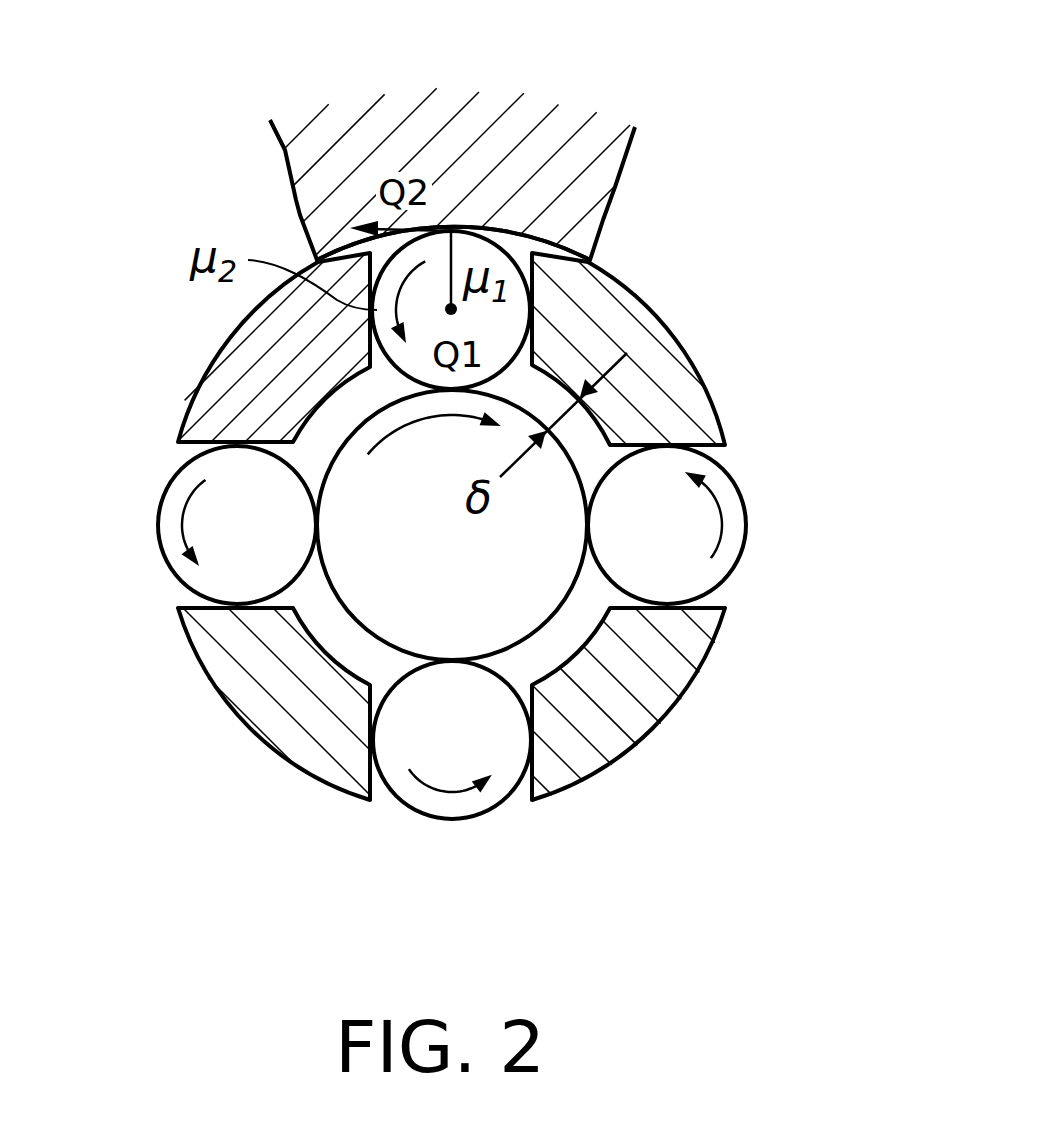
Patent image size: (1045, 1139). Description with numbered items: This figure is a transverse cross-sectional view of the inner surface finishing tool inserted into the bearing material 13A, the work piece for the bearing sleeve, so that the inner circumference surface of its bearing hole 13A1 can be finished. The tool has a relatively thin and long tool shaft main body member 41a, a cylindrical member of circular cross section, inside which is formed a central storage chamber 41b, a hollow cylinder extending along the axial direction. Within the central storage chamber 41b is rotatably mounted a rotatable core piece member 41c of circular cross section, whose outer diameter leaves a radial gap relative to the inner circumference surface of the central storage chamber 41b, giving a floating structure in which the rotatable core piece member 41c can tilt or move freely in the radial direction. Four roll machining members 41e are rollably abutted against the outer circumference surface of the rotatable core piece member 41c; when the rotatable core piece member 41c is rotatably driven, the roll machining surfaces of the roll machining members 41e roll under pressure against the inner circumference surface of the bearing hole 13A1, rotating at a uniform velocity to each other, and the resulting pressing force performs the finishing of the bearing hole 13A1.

The bearing material 13A is at (520, 123).
The bearing hole 13A1 is at (558, 266).
The tool shaft main body member 41a is at (288, 728).
The central storage chamber 41b is at (330, 420).
The rotatable core piece member 41c is at (490, 604).
The roll machining members 41e is at (502, 325).